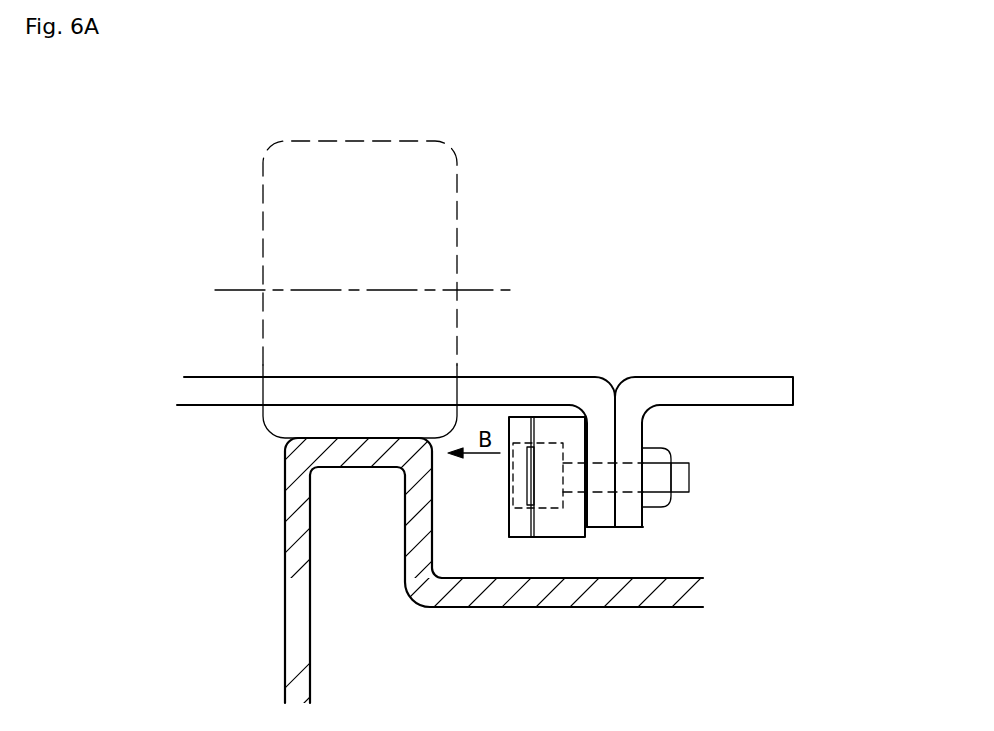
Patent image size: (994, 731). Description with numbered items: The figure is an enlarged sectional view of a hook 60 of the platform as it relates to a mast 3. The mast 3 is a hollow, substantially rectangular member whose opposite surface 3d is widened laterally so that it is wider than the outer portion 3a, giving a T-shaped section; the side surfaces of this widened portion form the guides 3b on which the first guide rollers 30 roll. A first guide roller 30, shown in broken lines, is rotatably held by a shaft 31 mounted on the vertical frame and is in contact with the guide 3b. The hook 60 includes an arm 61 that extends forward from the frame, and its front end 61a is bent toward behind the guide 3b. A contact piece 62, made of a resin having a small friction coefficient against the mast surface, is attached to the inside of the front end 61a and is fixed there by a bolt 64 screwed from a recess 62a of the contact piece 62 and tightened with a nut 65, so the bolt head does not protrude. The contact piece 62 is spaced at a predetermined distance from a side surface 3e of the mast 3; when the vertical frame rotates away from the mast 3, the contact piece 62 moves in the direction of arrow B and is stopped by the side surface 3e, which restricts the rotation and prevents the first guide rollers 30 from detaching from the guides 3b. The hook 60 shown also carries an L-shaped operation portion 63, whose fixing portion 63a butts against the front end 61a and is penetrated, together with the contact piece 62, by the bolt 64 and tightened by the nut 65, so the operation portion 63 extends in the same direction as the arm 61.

The mast 3 is at (466, 550).
The outer portion 3a is at (447, 610).
The guide 3b is at (337, 438).
The opposite surface 3d is at (285, 570).
The side surface 3e is at (432, 500).
The first guide roller 30 is at (397, 142).
The shaft 31 is at (397, 290).
The hook 60 is at (518, 455).
The arm 61 is at (493, 380).
The front end 61a is at (598, 517).
The contact piece 62 is at (548, 420).
The recess 62a is at (507, 495).
The operation portion 63 is at (793, 380).
The fixing portion 63a is at (633, 513).
The bolt 64 is at (689, 477).
The nut 65 is at (662, 503).